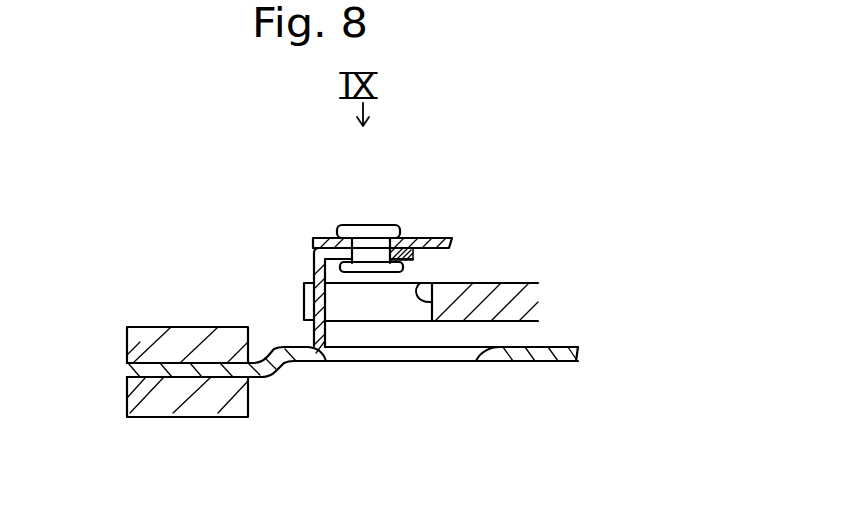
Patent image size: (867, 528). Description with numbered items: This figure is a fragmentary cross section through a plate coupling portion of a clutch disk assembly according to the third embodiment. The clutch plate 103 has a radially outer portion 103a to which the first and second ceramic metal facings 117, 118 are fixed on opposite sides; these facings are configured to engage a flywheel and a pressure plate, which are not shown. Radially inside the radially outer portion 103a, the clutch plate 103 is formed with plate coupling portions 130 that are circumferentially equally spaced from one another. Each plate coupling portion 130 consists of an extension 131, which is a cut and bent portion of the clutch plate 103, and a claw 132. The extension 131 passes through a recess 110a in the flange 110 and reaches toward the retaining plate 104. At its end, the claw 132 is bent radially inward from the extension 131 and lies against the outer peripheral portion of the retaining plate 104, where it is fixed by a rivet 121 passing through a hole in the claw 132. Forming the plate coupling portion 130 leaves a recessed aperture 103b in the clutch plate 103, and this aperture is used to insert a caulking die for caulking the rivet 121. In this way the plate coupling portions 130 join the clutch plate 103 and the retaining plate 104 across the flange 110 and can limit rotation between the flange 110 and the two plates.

The clutch plate 103 is at (333, 349).
The radially outer portion 103a is at (175, 368).
The recessed aperture 103b is at (475, 362).
The retaining plate 104 is at (440, 240).
The flange 110 is at (457, 230).
The recess 110a is at (420, 283).
The first ceramic metal facing 117 is at (150, 391).
The second ceramic metal facing 118 is at (137, 343).
The rivet 121 is at (363, 245).
The plate coupling portion 130 is at (317, 224).
The extension 131 is at (307, 297).
The claw 132 is at (407, 247).